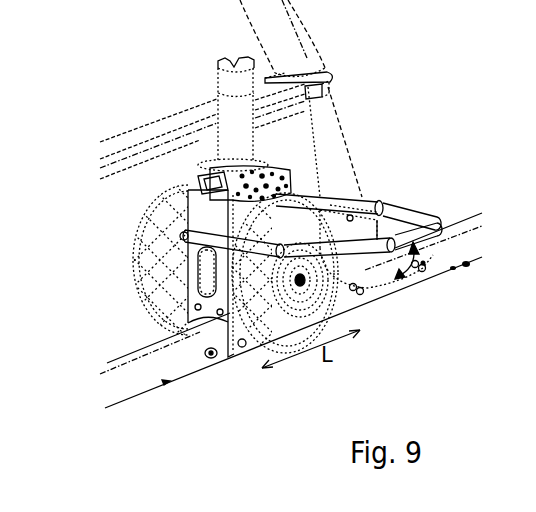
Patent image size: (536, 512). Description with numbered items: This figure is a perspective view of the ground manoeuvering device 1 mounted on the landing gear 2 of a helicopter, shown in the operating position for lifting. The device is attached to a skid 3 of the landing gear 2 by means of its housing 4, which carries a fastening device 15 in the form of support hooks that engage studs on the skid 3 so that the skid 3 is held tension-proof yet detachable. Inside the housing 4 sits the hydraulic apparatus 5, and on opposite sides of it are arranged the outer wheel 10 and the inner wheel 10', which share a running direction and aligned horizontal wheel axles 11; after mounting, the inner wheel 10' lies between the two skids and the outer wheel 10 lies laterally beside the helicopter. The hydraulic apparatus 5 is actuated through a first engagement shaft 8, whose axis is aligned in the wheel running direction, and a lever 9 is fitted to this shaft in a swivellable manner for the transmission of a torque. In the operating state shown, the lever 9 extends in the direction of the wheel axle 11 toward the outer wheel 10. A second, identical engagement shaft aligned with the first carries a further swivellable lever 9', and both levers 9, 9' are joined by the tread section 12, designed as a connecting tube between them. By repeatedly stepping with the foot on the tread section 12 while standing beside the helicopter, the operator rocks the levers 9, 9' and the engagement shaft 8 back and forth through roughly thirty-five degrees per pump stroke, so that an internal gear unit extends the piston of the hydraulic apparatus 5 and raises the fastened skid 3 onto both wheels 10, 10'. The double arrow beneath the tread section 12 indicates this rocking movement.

The ground manoeuvering device 1 is at (100, 222).
The landing gear 2 is at (293, 42).
The skid 3 is at (153, 372).
The housing 4 is at (203, 298).
The hydraulic apparatus 5 is at (274, 172).
The first engagement shaft 8 is at (182, 236).
The lever 9 is at (280, 167).
The lever 9' is at (358, 193).
The outer wheel 10 is at (281, 300).
The inner wheel 10' is at (135, 262).
The wheel axle 11 is at (308, 277).
The tread section 12 is at (413, 242).
The fastening device 15 is at (234, 355).